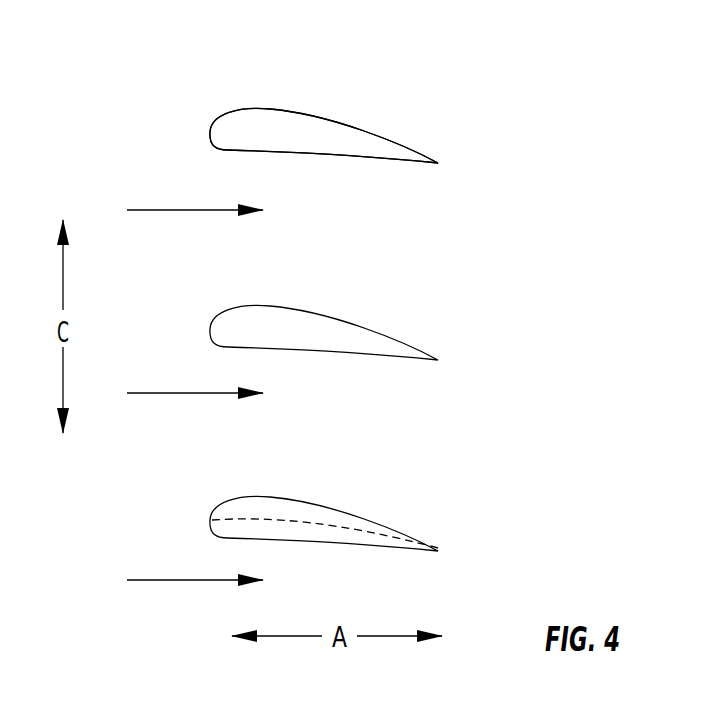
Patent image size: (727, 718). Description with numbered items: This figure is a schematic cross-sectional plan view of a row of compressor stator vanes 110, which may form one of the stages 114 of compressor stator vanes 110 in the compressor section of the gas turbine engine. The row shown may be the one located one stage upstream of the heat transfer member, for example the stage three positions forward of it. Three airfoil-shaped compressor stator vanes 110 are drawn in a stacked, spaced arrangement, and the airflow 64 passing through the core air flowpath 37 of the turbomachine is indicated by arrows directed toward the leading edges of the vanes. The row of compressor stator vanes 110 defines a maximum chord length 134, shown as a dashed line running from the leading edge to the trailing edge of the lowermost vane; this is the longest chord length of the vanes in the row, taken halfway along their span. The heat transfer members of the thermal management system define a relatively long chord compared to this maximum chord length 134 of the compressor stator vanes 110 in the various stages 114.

The stage of compressor stator vanes 114 is at (358, 84).
The compressor stator vane 110 is at (412, 155).
The core air flowpath 37 is at (393, 300).
The maximum chord length 134 is at (313, 522).
The airflow 64 is at (162, 582).